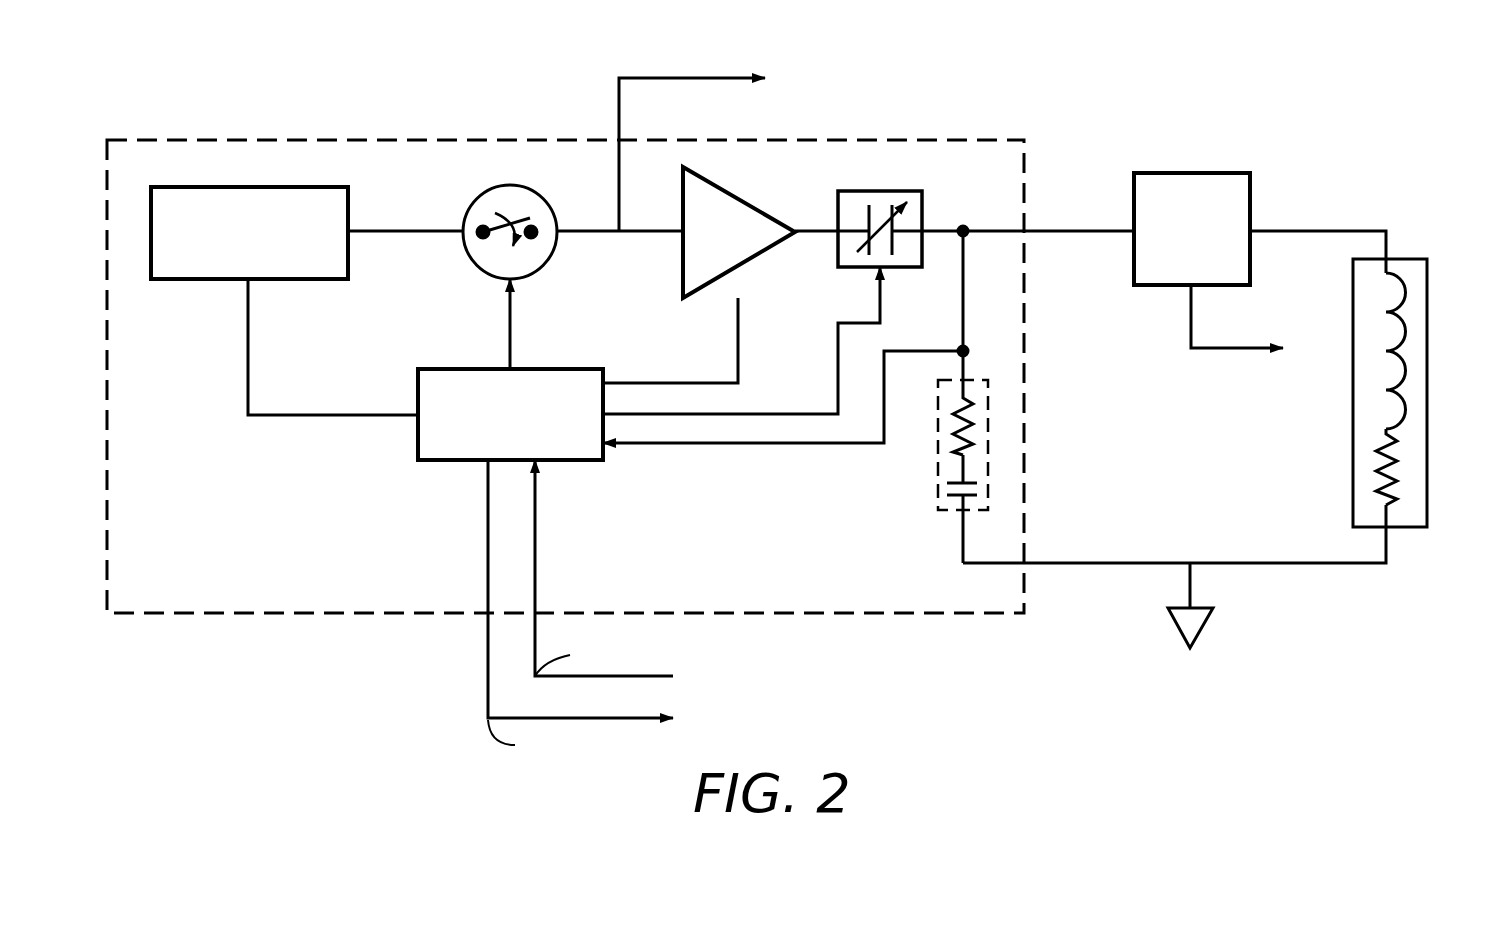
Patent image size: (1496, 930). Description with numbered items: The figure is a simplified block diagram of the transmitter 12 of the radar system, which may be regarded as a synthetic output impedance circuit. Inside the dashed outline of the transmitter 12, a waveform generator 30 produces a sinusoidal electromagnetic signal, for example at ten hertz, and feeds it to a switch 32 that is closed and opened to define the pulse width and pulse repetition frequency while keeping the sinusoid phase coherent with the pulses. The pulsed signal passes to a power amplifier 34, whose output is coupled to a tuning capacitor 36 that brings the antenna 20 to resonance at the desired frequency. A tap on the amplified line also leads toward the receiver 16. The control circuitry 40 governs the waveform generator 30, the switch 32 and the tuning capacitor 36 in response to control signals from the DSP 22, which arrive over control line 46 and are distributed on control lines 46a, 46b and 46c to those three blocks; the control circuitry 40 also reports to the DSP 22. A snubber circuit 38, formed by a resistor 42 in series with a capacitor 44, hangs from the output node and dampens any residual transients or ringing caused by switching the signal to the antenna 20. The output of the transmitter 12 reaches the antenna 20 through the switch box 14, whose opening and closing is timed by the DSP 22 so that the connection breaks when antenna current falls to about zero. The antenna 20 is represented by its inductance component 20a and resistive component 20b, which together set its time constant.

The transmitter 12 is at (385, 140).
The switch box 14 is at (1252, 202).
The receiver 16 is at (728, 135).
The antenna 20 is at (1423, 378).
The inductance component 20a is at (1407, 328).
The resistive component 20b is at (1393, 483).
The DSP 22 is at (885, 521).
The waveform generator 30 is at (273, 187).
The switch 32 is at (508, 186).
The power amplifier 34 is at (717, 183).
The tuning capacitor 36 is at (897, 190).
The snubber circuit 38 is at (940, 397).
The control circuitry 40 is at (418, 368).
The resistor 42 is at (960, 453).
The capacitor 44 is at (953, 483).
The control line from DSP 46 is at (535, 572).
The control line to wave form generator 46a is at (248, 388).
The control line to switch 46b is at (510, 350).
The control line to power amplifier 46c is at (738, 355).